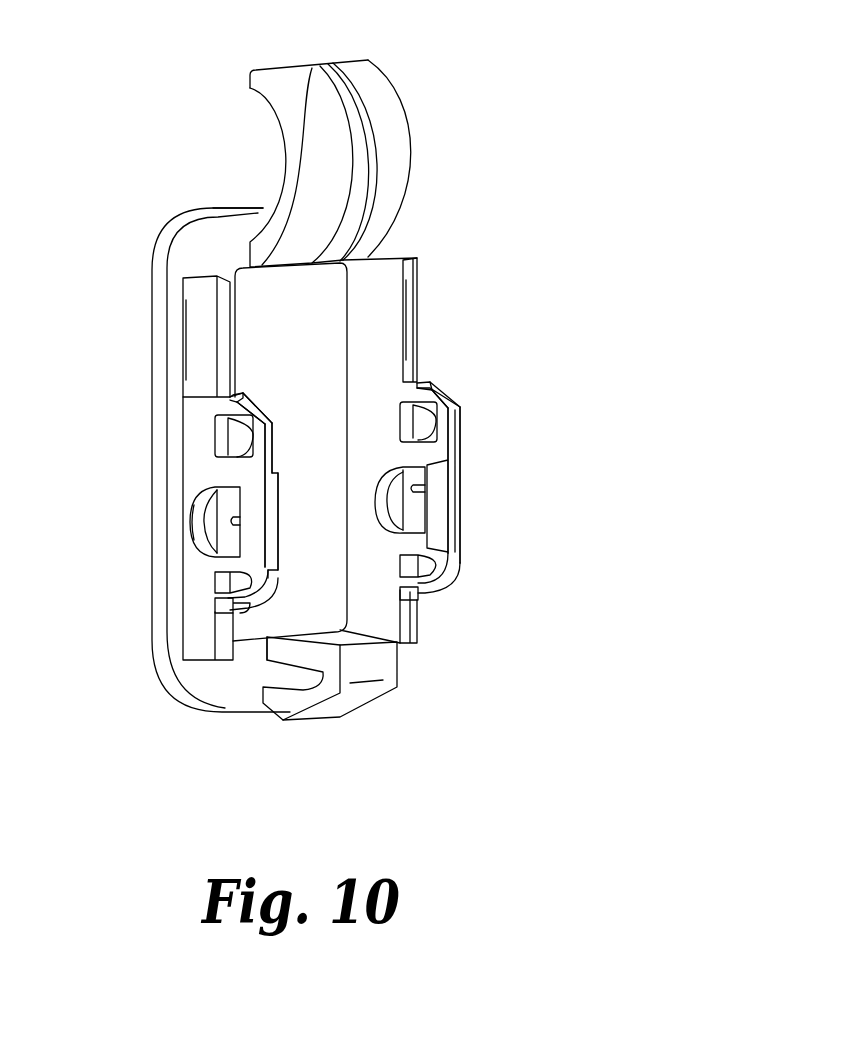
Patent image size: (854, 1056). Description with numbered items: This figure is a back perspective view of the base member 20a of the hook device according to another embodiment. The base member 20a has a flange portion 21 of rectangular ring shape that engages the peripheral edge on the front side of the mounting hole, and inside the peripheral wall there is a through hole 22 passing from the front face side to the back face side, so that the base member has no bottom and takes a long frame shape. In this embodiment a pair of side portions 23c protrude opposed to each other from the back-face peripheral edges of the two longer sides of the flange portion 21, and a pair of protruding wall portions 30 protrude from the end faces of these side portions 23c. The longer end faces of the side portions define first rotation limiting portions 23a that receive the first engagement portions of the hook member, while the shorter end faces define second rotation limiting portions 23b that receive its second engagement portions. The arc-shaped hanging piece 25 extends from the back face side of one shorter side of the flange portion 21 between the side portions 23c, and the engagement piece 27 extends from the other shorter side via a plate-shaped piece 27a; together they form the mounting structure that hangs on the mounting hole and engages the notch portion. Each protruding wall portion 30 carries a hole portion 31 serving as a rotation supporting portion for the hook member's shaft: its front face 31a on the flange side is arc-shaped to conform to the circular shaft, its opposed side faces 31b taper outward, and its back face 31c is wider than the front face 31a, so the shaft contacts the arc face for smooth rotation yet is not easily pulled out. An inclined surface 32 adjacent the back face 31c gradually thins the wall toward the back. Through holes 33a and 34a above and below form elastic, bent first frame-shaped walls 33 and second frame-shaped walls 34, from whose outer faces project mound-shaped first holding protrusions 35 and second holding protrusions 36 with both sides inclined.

The base member 20a is at (212, 197).
The flange portion 21 is at (197, 242).
The through hole 22 is at (330, 322).
The first rotation limiting portions 23a is at (220, 308).
The second rotation limiting portions 23b is at (233, 641).
The side portions 23c is at (195, 353).
The hanging piece 25 is at (397, 125).
The engagement piece 27 is at (315, 713).
The plate-shaped piece 27a is at (277, 648).
The protruding wall portions 30 is at (275, 406).
The hole portions 31 is at (225, 540).
The front face 31a is at (192, 523).
The side faces 31b is at (228, 485).
The back face 31c is at (238, 521).
The inclined surface 32 is at (270, 487).
The first frame-shaped walls 33 is at (219, 407).
The through holes 33a is at (232, 437).
The second frame-shaped walls 34 is at (220, 600).
The through holes 34a is at (217, 584).
The first holding protrusions 35 is at (240, 396).
The second holding protrusions 36 is at (218, 606).